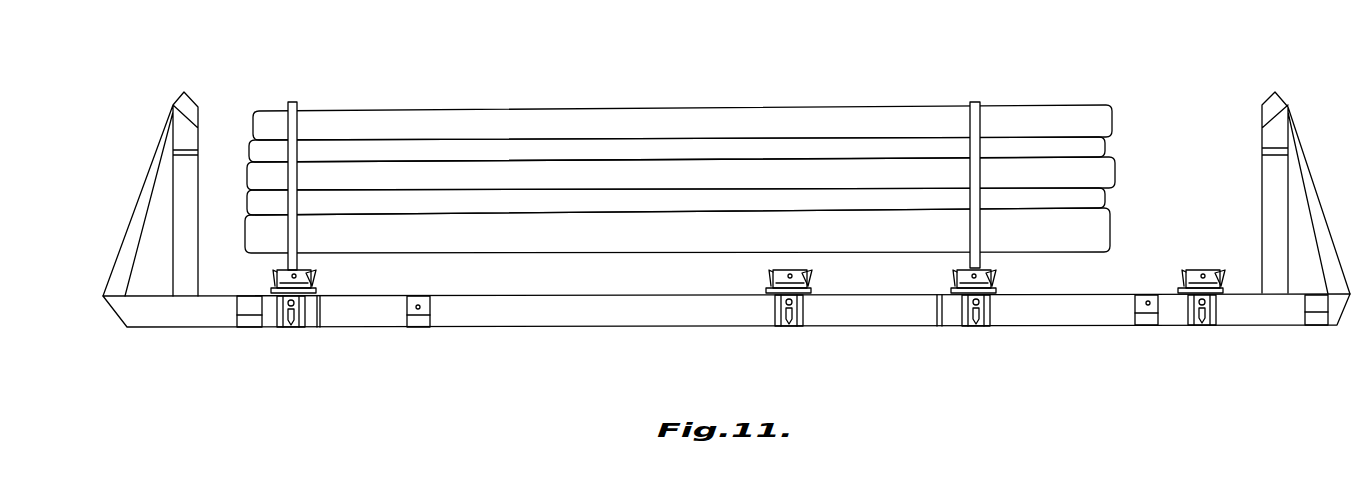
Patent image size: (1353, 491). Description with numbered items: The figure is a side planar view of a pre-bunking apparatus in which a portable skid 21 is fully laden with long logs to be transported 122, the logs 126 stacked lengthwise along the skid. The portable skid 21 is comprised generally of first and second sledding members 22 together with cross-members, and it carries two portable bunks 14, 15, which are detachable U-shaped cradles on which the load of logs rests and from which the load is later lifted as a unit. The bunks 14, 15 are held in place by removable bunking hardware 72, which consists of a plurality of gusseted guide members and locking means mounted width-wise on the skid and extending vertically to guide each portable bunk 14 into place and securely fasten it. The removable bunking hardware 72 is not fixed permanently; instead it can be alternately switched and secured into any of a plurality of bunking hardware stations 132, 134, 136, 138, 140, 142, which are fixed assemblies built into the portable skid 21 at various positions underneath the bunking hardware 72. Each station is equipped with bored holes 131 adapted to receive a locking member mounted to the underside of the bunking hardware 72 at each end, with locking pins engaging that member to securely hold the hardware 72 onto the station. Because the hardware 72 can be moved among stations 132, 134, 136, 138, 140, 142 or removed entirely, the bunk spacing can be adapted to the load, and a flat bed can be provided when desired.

The portable bunk 14 is at (973, 120).
The portable bunk 15 is at (297, 122).
The portable skid 21 is at (726, 357).
The sledding members 22 is at (622, 328).
The removable bunking hardware 72 is at (265, 282).
The long logs to be transported 122 is at (680, 140).
The pipe 126 is at (807, 112).
The bored holes 131 is at (420, 308).
The bunking hardware station 132 is at (286, 332).
The bunking hardware station 134 is at (415, 330).
The bunking hardware station 136 is at (792, 330).
The bunking hardware station 138 is at (980, 329).
The bunking hardware station 140 is at (1147, 327).
The bunking hardware station 142 is at (1208, 328).